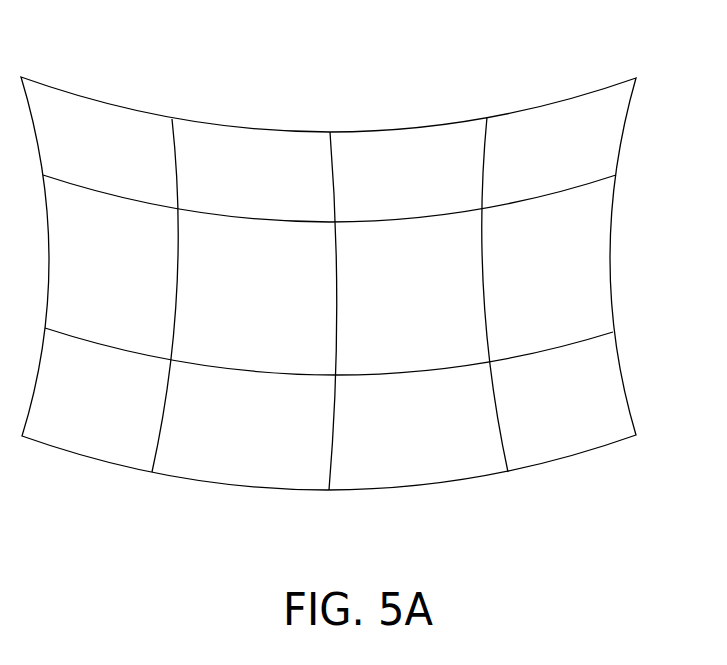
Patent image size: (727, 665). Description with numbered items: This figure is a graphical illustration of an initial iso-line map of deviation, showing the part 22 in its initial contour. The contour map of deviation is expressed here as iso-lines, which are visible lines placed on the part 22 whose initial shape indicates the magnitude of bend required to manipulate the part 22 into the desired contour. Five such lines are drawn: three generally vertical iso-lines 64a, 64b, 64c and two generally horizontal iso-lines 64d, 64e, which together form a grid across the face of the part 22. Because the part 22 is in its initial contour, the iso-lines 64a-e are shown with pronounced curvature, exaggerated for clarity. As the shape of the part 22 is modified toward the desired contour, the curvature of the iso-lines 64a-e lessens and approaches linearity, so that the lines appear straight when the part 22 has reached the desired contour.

The part 22 is at (577, 93).
The iso-line 64a is at (173, 163).
The iso-line 64b is at (328, 163).
The iso-line 64c is at (487, 158).
The iso-line 64d is at (553, 193).
The iso-line 64e is at (565, 347).